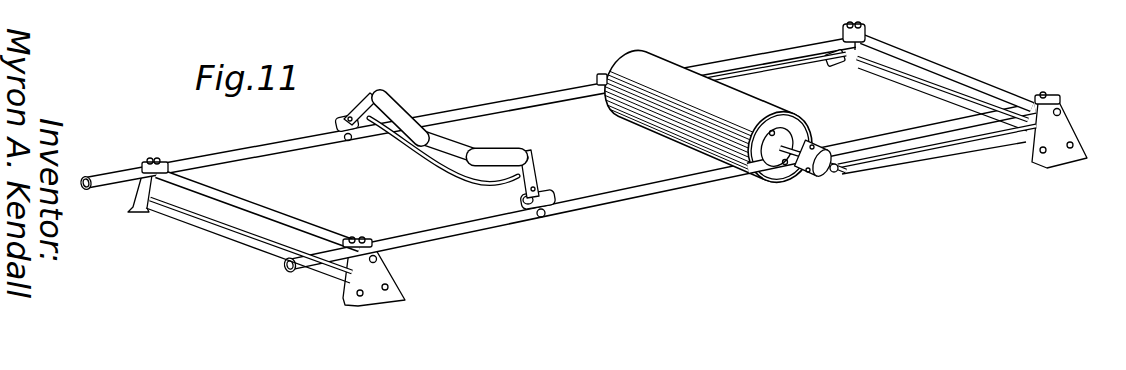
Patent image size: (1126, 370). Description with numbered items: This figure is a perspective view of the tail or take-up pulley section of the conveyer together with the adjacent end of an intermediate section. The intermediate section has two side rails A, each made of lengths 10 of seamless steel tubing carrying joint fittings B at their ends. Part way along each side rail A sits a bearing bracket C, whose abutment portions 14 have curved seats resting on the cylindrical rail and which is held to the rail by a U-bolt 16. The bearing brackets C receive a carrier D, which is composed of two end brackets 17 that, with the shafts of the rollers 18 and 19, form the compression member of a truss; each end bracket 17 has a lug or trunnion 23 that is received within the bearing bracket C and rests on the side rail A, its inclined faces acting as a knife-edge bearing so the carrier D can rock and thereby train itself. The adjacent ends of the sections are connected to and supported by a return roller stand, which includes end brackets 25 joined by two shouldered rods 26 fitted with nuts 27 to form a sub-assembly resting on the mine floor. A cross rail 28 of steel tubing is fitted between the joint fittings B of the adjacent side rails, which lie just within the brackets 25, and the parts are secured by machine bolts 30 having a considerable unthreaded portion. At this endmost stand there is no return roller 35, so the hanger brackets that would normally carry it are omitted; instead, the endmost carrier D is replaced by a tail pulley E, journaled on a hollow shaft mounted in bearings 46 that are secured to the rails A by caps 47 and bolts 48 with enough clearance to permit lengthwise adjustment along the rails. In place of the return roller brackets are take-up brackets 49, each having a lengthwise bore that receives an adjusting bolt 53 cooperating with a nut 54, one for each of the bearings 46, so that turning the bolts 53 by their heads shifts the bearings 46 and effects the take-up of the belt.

The length of seamless steel tubing 10 is at (100, 177).
The side rail A is at (500, 103).
The joint fitting B is at (163, 162).
The bearing bracket C is at (343, 118).
The carrier D is at (443, 177).
The tail pulley E is at (668, 142).
The abutment portion 14 is at (516, 206).
The U-bolt 16 is at (531, 220).
The end bracket 17 is at (367, 100).
The roller 18 is at (405, 105).
The roller 19 is at (455, 142).
The lug or trunnion 23 is at (557, 215).
The end bracket 25 is at (140, 195).
The shouldered rod 26 is at (915, 90).
The nut 27 is at (1075, 145).
The cross rail 28 is at (930, 48).
The machine bolt 30 is at (380, 259).
The return roller 35 is at (224, 224).
The bearing 46 is at (778, 160).
The cap 47 is at (604, 78).
The bolt 48 is at (839, 167).
The take-up bracket 49 is at (830, 64).
The adjusting bolt 53 is at (784, 66).
The nut 54 is at (812, 178).